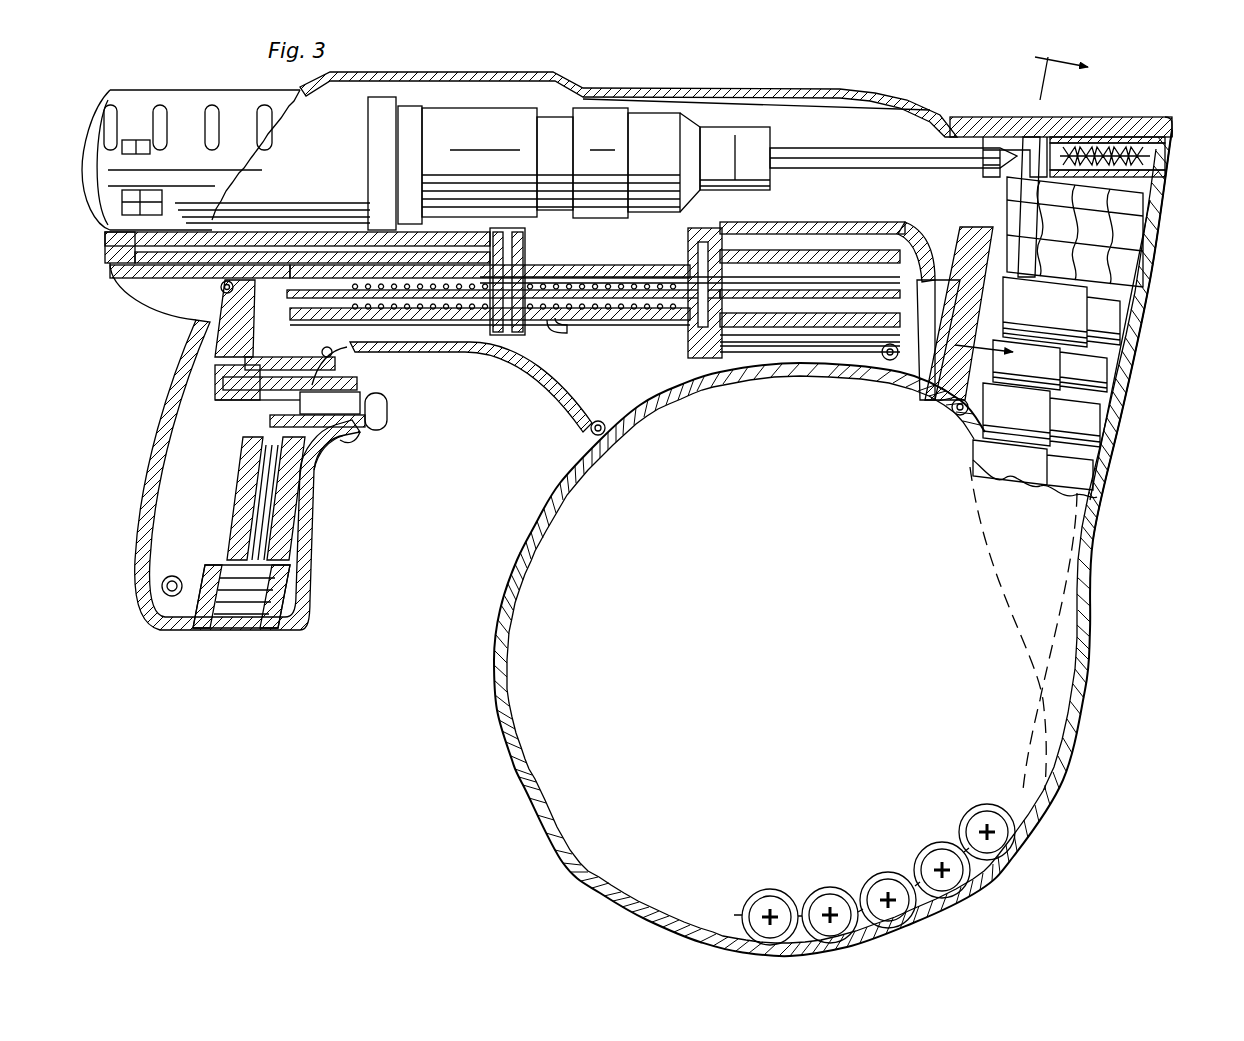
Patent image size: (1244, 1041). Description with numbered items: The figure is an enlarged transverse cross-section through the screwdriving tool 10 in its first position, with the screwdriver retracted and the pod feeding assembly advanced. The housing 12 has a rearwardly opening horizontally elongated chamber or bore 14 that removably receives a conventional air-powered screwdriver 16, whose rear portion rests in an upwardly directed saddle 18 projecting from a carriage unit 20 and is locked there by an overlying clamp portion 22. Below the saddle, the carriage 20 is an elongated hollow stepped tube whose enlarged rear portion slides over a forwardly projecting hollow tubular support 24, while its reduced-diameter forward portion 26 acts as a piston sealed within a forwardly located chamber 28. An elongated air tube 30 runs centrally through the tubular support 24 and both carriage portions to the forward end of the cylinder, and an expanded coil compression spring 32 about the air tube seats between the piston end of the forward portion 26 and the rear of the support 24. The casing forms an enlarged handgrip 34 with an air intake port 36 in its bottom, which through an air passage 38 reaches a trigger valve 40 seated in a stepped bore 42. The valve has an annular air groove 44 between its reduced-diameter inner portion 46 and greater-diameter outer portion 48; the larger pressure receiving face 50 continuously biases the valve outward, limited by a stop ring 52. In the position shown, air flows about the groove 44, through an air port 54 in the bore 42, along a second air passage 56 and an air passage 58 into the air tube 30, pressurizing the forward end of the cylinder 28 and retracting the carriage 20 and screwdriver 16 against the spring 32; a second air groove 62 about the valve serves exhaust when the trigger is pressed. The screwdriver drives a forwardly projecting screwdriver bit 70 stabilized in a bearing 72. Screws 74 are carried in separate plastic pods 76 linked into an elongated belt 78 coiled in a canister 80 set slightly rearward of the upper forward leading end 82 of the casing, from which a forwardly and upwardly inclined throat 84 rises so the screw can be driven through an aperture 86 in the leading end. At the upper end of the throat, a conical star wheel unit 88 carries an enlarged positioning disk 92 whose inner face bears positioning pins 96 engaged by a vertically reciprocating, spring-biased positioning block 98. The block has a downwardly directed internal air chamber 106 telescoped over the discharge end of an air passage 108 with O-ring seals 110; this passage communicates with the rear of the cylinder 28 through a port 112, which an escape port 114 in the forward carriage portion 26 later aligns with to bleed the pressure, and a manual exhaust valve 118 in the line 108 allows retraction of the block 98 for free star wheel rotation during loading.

The screwdriving tool 10 is at (905, 90).
The housing 12 is at (790, 88).
The chamber or bore 14 is at (675, 96).
The air-powered screwdriver 16 is at (460, 110).
The saddle 18 is at (215, 185).
The carriage unit 20 is at (330, 222).
The clamp portion 22 is at (195, 100).
The tubular support 24 is at (478, 335).
The forward portion 26 is at (615, 268).
The chamber 28 is at (795, 248).
The air tube 30 is at (625, 305).
The coil compression spring 32 is at (537, 270).
The handgrip 34 is at (150, 487).
The air intake port 36 is at (248, 610).
The air passage 38 is at (268, 517).
The trigger valve 40 is at (382, 425).
The stepped bore 42 is at (270, 397).
The air groove 44 is at (282, 398).
The inner portion 46 is at (255, 396).
The outer portion 48 is at (385, 400).
The pressure receiving face 50 is at (338, 458).
The stop ring 52 is at (240, 368).
The air port 54 is at (358, 386).
The second air passage 56 is at (222, 380).
The air passage 58 is at (240, 335).
The second air groove 62 is at (355, 440).
The screwdriver bit 70 is at (822, 158).
The bearing 72 is at (950, 130).
The screws 74 is at (1130, 148).
The pods 76 is at (1160, 190).
The belt 78 is at (1060, 627).
The canister 80 is at (560, 825).
The leading end 82 is at (1175, 130).
The throat 84 is at (1132, 318).
The aperture 86 is at (1165, 160).
The star wheel unit 88 is at (1135, 258).
The positioning disk 92 is at (1030, 150).
The positioning pins 96 is at (1005, 150).
The positioning block 98 is at (920, 245).
The air chamber 106 is at (1010, 296).
The air passage 108 is at (957, 345).
The O-ring seals 110 is at (888, 302).
The port 112 is at (700, 340).
The escape port 114 is at (550, 320).
The manual exhaust valve 118 is at (880, 362).